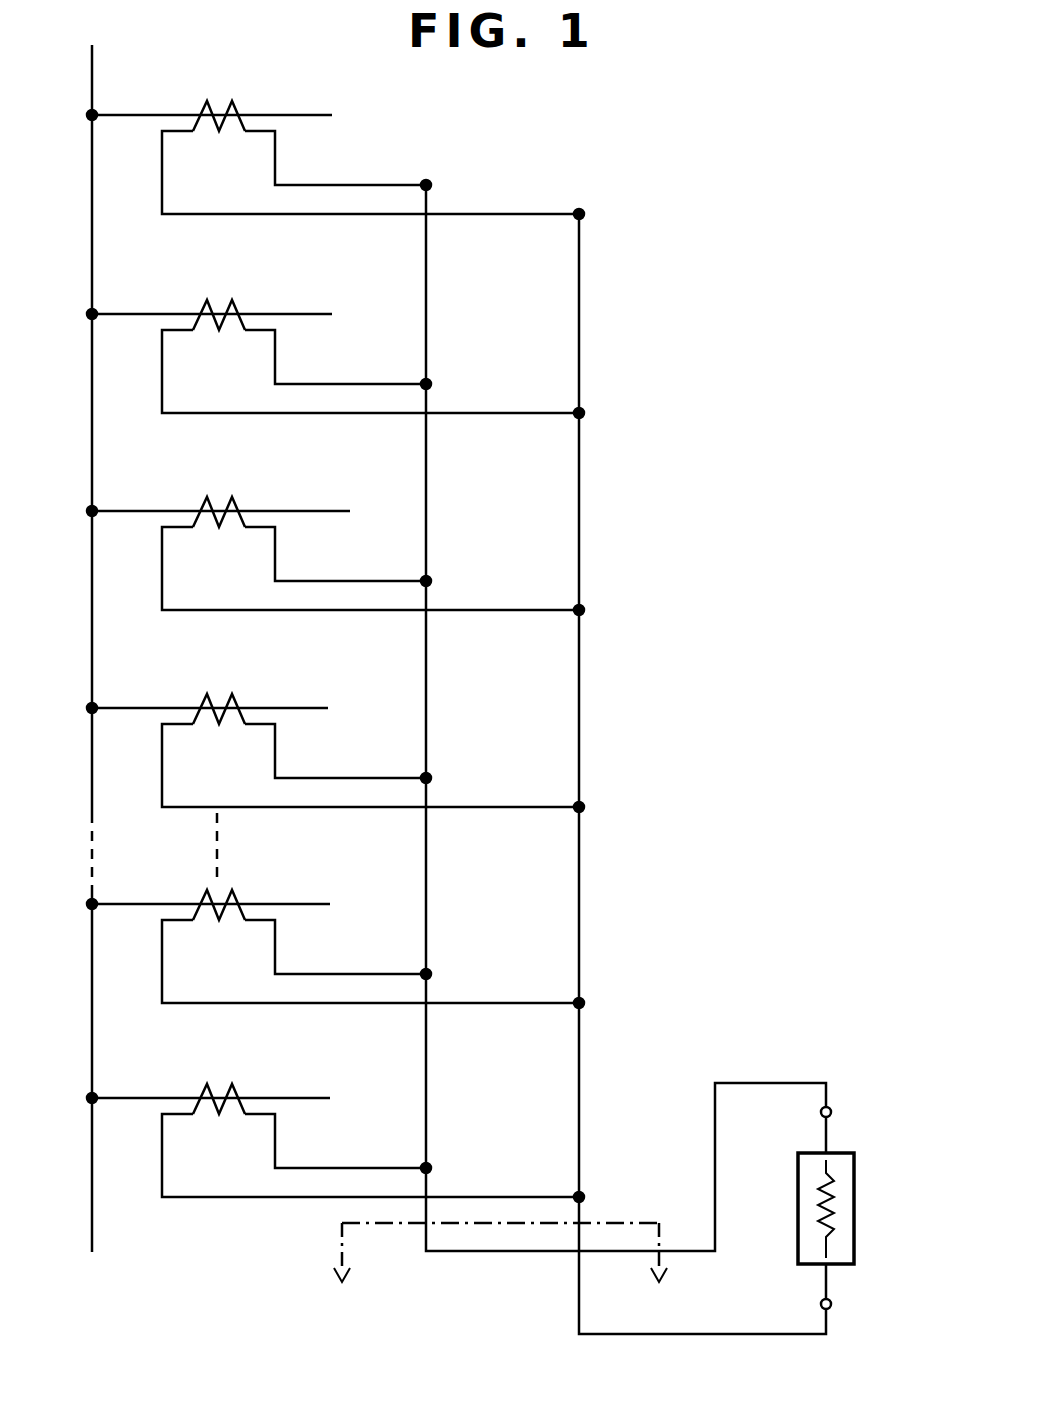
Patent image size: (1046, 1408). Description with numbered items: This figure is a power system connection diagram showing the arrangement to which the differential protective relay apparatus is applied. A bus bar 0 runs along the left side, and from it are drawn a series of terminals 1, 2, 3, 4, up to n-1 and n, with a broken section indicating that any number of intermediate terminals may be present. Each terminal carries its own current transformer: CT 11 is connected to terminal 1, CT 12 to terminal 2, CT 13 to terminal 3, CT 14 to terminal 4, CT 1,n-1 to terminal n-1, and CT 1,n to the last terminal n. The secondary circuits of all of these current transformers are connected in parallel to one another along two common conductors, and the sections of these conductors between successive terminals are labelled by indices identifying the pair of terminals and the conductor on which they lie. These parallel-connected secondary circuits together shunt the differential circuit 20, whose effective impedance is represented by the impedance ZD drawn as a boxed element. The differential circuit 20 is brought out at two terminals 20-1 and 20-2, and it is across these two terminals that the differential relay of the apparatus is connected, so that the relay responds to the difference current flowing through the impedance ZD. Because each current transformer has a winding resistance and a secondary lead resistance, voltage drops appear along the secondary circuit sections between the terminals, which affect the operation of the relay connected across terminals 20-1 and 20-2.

The bus bar 0 is at (92, 202).
The terminal 1 is at (222, 115).
The terminal 2 is at (218, 314).
The terminal 3 is at (229, 511).
The terminal 4 is at (218, 709).
The terminal n-1 is at (231, 904).
The terminal n is at (218, 1097).
The current transformer 11 is at (220, 110).
The current transformer 12 is at (218, 307).
The current transformer 13 is at (218, 504).
The current transformer 14 is at (218, 701).
The current transformer 1,n-1 is at (218, 897).
The current transformer 1,n is at (218, 1091).
The differential circuit 20 is at (424, 1233).
The terminal of differential circuit 20-1 is at (832, 1112).
The terminal of differential circuit 20-2 is at (832, 1304).
The impedance of differential circuit ZD is at (848, 1208).